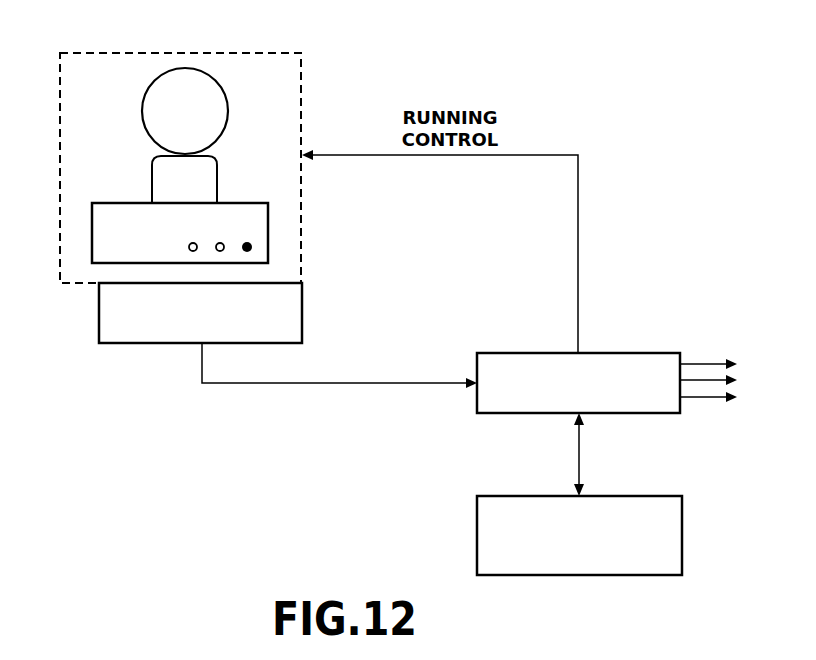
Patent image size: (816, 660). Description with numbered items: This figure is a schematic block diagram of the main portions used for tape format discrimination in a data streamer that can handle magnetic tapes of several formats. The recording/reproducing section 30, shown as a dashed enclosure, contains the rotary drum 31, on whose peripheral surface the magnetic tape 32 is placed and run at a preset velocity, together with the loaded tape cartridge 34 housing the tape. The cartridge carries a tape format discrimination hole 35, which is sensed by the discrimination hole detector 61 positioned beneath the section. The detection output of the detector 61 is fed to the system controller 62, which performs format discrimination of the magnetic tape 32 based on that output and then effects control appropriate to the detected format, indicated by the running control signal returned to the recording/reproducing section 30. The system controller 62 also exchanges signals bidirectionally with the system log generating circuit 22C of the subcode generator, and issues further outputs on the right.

The recording/reproducing section 30 is at (308, 111).
The rotary drum 31 is at (208, 93).
The magnetic tape 32 is at (152, 172).
The tape cartridge 34 is at (262, 220).
The tape format discrimination hole 35 is at (250, 247).
The discrimination hole detector 61 is at (302, 305).
The system controller 62 is at (637, 360).
The system log generating circuit 22C is at (500, 508).